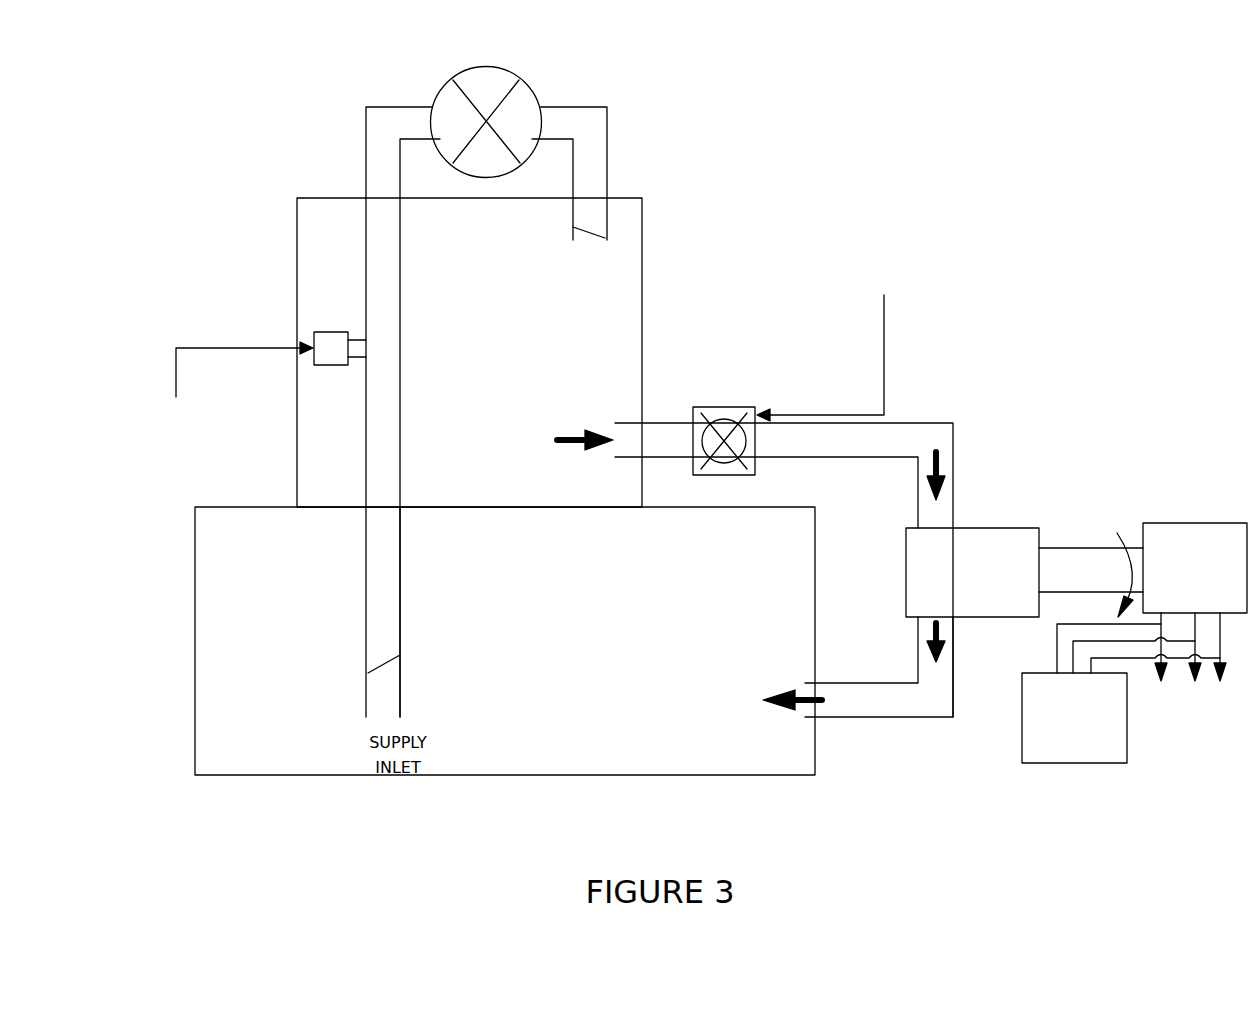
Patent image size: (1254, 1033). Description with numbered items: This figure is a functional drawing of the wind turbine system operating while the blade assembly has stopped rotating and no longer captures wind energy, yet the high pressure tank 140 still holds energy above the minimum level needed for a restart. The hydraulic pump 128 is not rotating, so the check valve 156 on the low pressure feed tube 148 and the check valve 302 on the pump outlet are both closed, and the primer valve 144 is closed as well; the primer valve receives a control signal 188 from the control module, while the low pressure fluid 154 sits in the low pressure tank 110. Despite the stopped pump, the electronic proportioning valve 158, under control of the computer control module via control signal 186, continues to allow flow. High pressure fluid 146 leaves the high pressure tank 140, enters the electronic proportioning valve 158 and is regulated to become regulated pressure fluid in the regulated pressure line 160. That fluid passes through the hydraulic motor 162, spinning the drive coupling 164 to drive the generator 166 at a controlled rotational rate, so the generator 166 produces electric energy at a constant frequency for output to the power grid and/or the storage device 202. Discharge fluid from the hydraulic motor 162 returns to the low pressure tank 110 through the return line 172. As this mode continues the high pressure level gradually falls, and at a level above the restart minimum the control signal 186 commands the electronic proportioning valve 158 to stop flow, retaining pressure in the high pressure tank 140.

The low pressure tank 110 is at (507, 777).
The hydraulic pump 128 is at (522, 107).
The high pressure tank 140 is at (643, 325).
The primer valve 144 is at (330, 330).
The high pressure fluid 146 is at (487, 340).
The low pressure feed tube 148 is at (400, 502).
The low pressure fluid 154 is at (272, 736).
The check valve 156 is at (368, 650).
The electronic proportioning valve 158 is at (722, 407).
The regulated pressure line 160 is at (937, 423).
The hydraulic motor 162 is at (973, 527).
The drive coupling 164 is at (1058, 547).
The generator 166 is at (1197, 522).
The return line 172 is at (847, 718).
The control signal 186 is at (861, 323).
The control signal 188 is at (210, 394).
The storage device 202 is at (1076, 763).
The check valve 302 is at (593, 230).